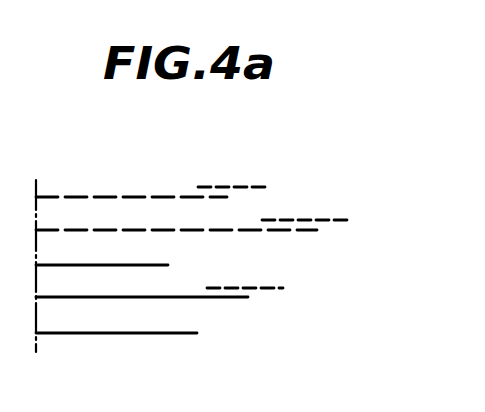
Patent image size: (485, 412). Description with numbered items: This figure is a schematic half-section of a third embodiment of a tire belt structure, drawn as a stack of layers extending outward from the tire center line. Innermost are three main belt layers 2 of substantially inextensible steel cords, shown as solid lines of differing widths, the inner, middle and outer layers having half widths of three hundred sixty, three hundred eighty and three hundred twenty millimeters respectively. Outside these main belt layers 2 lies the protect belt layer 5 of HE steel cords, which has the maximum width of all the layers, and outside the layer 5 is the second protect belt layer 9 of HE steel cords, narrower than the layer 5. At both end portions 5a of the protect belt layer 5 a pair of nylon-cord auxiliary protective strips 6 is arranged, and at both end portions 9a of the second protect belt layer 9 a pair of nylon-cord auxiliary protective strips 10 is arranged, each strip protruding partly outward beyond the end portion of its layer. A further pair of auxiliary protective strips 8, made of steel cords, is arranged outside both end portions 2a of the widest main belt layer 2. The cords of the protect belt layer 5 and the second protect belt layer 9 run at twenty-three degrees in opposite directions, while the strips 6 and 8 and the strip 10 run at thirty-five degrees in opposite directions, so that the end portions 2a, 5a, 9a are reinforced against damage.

The main belt layers 2 is at (72, 266).
The end portions of the main belt layer 2a is at (238, 299).
The protect belt layer 5 is at (175, 232).
The end portions of the protect belt layer 5a is at (305, 232).
The auxiliary protective strips 6 is at (315, 219).
The auxiliary protective strips 8 is at (260, 289).
The second protect belt layer 9 is at (107, 196).
The end portions of the second protect belt layer 9a is at (221, 198).
The auxiliary protective strips 10 is at (243, 186).